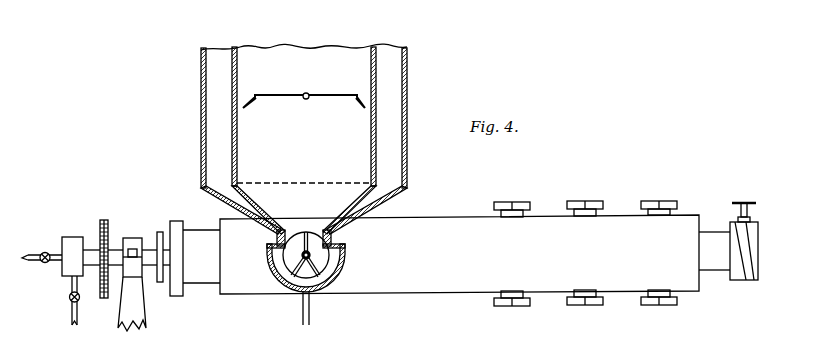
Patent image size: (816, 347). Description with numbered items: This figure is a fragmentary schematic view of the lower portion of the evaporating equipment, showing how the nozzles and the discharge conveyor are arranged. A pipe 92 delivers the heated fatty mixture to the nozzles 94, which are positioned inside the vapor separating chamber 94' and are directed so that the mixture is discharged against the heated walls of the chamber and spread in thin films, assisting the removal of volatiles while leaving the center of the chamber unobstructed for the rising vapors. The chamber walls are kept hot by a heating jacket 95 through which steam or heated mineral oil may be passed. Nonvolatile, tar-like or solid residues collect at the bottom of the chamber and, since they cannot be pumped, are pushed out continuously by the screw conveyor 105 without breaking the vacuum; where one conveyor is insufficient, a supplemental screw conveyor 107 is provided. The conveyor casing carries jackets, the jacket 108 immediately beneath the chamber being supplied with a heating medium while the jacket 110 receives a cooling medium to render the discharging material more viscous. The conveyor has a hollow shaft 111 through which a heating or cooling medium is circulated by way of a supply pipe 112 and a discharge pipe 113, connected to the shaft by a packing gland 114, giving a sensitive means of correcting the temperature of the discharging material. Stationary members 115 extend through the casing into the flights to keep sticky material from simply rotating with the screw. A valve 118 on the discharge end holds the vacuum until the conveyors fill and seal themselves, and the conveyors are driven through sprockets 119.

The pipe 92 is at (308, 94).
The nozzles 94 is at (303, 145).
The vapor separating chamber 94' is at (403, 66).
The heating jacket 95 is at (407, 117).
The screw conveyor 105 is at (292, 260).
The supplemental screw conveyor 107 is at (715, 233).
The jacket 108 is at (341, 276).
The jacket 110 is at (432, 232).
The hollow shaft 111 is at (305, 259).
The pipe 112 is at (60, 256).
The discharge pipe 113 is at (70, 305).
The packing gland 114 is at (72, 242).
The stationary members 115 is at (513, 203).
The valve 118 is at (757, 256).
The sprockets 119 is at (108, 229).